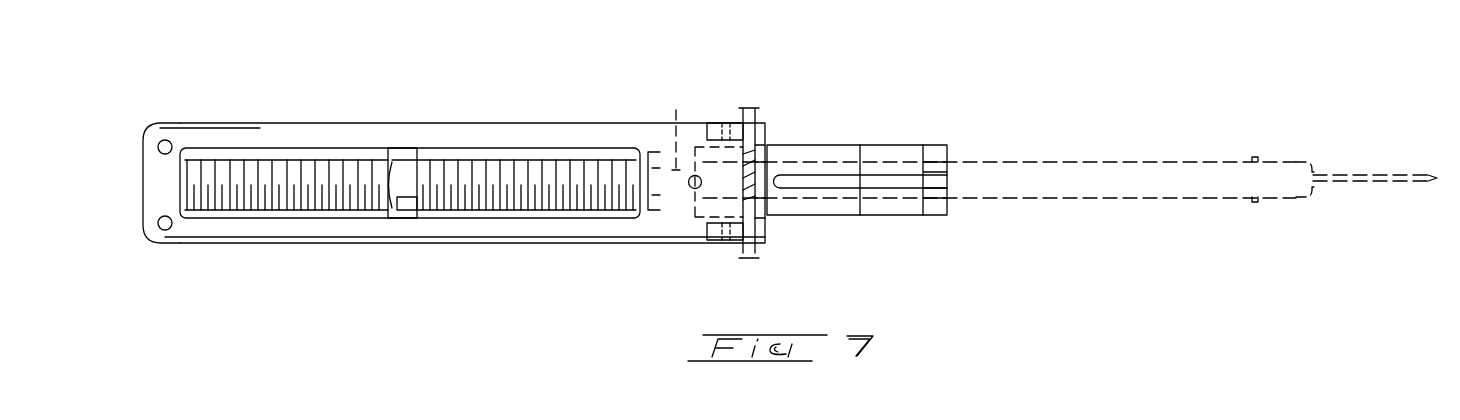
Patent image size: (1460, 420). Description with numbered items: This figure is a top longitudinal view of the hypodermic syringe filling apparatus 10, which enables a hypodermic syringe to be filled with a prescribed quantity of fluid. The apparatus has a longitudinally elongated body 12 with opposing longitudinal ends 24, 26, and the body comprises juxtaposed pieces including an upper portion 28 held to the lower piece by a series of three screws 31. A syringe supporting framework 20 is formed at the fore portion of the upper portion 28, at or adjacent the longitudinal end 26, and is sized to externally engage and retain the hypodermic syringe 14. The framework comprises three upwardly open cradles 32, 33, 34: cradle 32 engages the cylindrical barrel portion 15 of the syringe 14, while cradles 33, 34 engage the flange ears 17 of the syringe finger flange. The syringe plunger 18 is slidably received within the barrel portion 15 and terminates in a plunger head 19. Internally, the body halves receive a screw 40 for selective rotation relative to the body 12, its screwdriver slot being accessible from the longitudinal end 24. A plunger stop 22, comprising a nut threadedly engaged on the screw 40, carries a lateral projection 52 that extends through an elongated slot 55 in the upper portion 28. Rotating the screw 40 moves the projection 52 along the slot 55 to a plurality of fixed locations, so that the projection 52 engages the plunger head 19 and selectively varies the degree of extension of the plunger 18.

The hypodermic syringe filling apparatus 10 is at (930, 58).
The longitudinally elongated body 12 is at (563, 121).
The hypodermic syringe 14 is at (1060, 162).
The cylindrical barrel portion 15 is at (1121, 180).
The flange ears 17 is at (746, 105).
The plunger 18 is at (676, 126).
The plunger head/end 19 is at (671, 222).
The syringe supporting framework 20 is at (838, 122).
The plunger stop 22 is at (400, 149).
The longitudinal end 24 is at (126, 221).
The longitudinal end 26 is at (962, 227).
The upper portion 28 is at (462, 146).
The screws 31 is at (165, 140).
The cradle 32 is at (942, 148).
The cradle 33 is at (768, 133).
The cradle 34 is at (768, 234).
The screw 40 is at (520, 165).
The lateral projection 52 is at (405, 212).
The elongated slot 55 is at (298, 149).